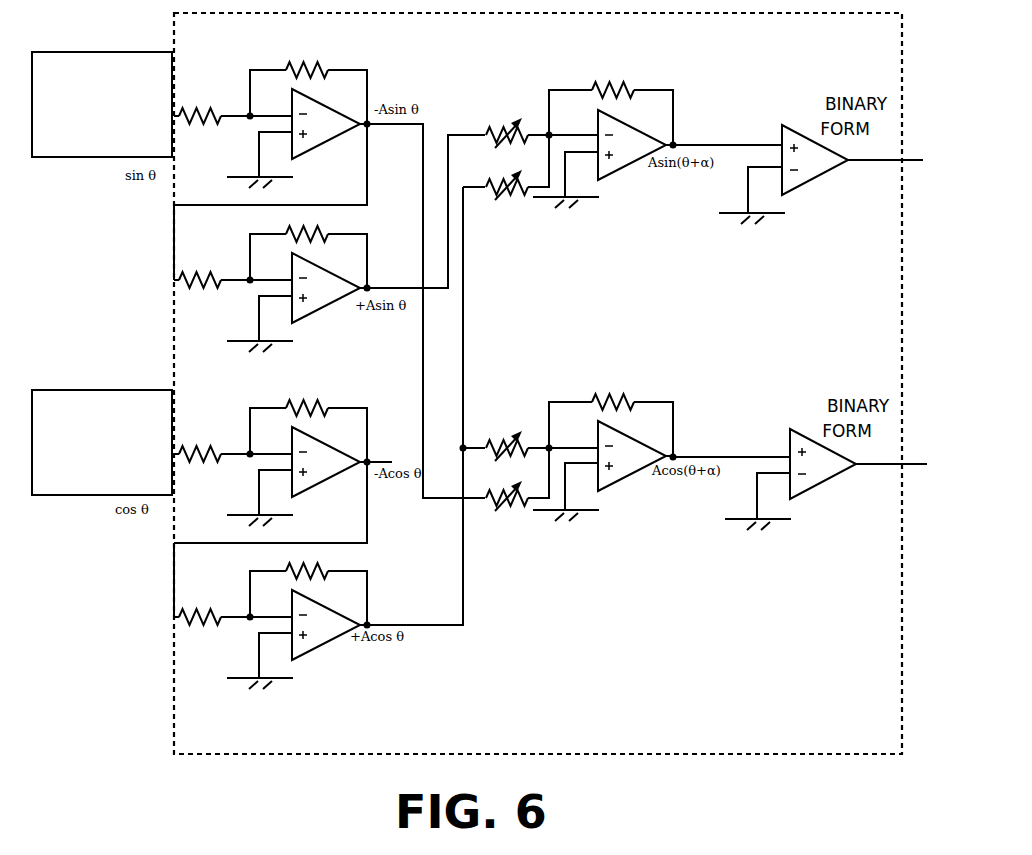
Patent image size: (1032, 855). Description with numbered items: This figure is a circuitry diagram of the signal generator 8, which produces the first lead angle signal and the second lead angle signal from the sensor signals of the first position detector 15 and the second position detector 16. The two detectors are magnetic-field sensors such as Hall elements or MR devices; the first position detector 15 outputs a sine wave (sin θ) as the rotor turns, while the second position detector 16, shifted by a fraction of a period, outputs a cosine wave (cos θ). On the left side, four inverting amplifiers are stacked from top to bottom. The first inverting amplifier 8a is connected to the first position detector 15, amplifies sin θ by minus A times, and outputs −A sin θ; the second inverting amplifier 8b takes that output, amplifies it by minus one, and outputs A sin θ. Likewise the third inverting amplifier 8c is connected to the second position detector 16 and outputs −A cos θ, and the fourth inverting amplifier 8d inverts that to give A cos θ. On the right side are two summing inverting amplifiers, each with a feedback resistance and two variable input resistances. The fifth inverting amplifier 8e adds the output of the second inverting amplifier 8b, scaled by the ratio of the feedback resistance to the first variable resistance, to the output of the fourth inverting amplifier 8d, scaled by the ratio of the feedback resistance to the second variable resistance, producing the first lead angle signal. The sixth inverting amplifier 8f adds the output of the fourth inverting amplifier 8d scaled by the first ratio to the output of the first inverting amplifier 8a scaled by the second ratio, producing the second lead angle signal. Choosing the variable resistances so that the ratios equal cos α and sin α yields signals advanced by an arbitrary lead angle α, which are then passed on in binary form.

The signal generator 8 is at (538, 383).
The first inverting amplifier 8a is at (388, 74).
The second inverting amplifier 8b is at (374, 232).
The third inverting amplifier 8c is at (362, 404).
The fourth inverting amplifier 8d is at (374, 571).
The fifth inverting amplifier 8e is at (690, 91).
The sixth inverting amplifier 8f is at (680, 395).
The first position detector 15 is at (102, 104).
The second position detector 16 is at (102, 442).